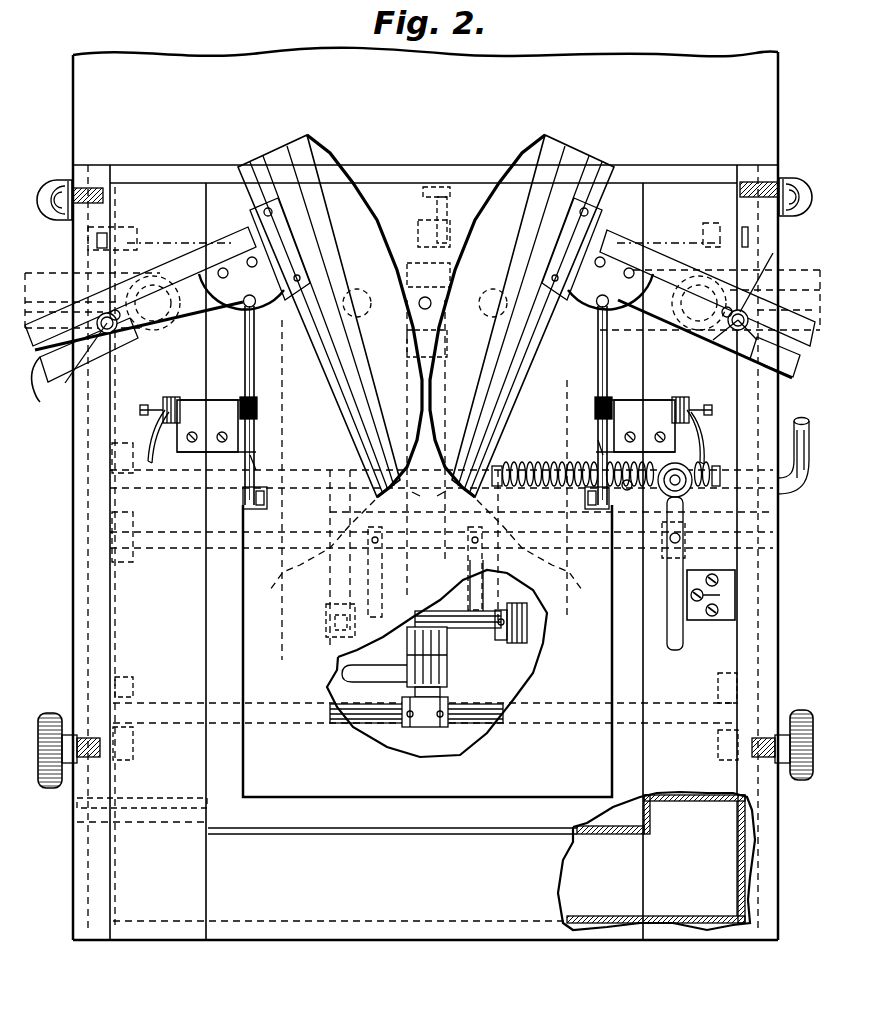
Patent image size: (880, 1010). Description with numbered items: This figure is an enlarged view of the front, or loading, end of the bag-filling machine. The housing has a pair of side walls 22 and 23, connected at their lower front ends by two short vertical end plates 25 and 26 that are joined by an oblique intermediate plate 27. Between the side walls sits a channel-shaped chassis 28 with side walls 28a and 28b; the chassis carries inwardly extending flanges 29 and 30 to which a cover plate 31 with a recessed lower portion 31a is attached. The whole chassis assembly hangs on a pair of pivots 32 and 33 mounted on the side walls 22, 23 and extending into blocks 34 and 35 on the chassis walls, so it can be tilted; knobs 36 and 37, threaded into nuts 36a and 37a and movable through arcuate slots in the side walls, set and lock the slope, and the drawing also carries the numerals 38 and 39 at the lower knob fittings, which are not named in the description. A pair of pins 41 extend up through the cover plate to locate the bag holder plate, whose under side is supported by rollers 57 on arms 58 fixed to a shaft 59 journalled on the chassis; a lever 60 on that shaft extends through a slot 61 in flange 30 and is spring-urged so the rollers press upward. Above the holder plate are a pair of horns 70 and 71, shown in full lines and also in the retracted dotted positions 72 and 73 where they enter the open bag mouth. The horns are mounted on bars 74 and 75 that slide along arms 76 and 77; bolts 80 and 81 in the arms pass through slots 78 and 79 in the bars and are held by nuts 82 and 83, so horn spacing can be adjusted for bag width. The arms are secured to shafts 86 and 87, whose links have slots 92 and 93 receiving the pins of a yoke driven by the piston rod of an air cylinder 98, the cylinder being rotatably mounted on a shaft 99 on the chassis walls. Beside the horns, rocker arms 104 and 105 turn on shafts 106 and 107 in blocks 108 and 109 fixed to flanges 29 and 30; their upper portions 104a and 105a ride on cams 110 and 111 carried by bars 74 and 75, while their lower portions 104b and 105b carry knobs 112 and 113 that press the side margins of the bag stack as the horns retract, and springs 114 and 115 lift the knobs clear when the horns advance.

The side wall 22 is at (86, 856).
The side wall 23 is at (761, 843).
The vertical end plate 25 is at (103, 903).
The vertical end plate 26 is at (752, 928).
The oblique intermediate plate 27 is at (437, 893).
The channel-shaped chassis 28 is at (660, 916).
The chassis side wall 28a is at (117, 862).
The chassis side wall 28b is at (737, 833).
The flange 29 is at (195, 759).
The flange 30 is at (655, 750).
The cover plate 31 is at (628, 193).
The recessed lower portion 31a is at (612, 834).
The pivot 32 is at (58, 180).
The pivot 33 is at (790, 178).
The block 34 is at (97, 187).
The block 35 is at (749, 180).
The knob 36 is at (67, 788).
The nut 36a is at (128, 758).
The knob 37 is at (785, 772).
The nut 37a is at (730, 754).
The left lower clamp bolt 38 is at (92, 732).
The right lower clamp bolt 39 is at (757, 728).
The pins 41 is at (429, 497).
The rollers 57 is at (328, 642).
The arms 58 is at (473, 594).
The shaft 59 is at (611, 565).
The lever 60 is at (689, 494).
The slot 61 is at (690, 640).
The horn 70 is at (318, 193).
The horn 71 is at (545, 160).
The dotted outline 72 is at (358, 500).
The dotted outline 73 is at (503, 490).
The bar 74 is at (196, 247).
The bar 75 is at (663, 260).
The arm 76 is at (67, 380).
The arm 77 is at (798, 417).
The slot 78 is at (36, 389).
The slot 79 is at (802, 358).
The bolt 80 is at (108, 330).
The bolt 81 is at (775, 254).
The nut 82 is at (118, 329).
The nut 83 is at (731, 326).
The shaft 86 is at (122, 318).
The shaft 87 is at (695, 327).
The slot 92 is at (351, 212).
The slot 93 is at (489, 222).
The air cylinder 98 is at (448, 650).
The shaft 99 is at (470, 714).
The rocker arm 104 is at (244, 379).
The upper portion 104a is at (241, 283).
The lower portion 104b is at (251, 466).
The rocker arm 105 is at (602, 398).
The upper portion 105a is at (610, 283).
The lower portion 105b is at (598, 442).
The shaft 106 is at (158, 409).
The shaft 107 is at (707, 408).
The block 108 is at (204, 446).
The block 109 is at (653, 410).
The cam 110 is at (232, 247).
The cam 111 is at (617, 245).
The knob 112 is at (265, 509).
The knob 113 is at (594, 535).
The spring 114 is at (147, 432).
The spring 115 is at (703, 436).